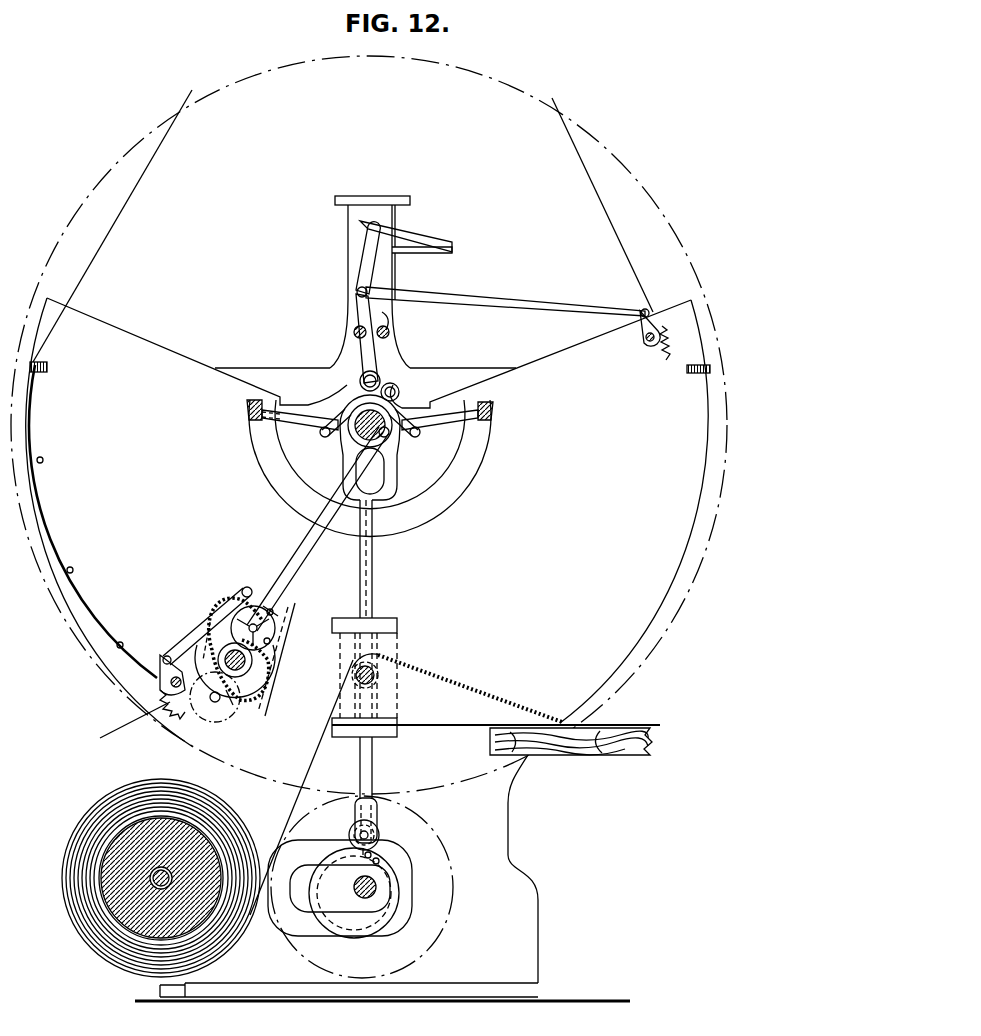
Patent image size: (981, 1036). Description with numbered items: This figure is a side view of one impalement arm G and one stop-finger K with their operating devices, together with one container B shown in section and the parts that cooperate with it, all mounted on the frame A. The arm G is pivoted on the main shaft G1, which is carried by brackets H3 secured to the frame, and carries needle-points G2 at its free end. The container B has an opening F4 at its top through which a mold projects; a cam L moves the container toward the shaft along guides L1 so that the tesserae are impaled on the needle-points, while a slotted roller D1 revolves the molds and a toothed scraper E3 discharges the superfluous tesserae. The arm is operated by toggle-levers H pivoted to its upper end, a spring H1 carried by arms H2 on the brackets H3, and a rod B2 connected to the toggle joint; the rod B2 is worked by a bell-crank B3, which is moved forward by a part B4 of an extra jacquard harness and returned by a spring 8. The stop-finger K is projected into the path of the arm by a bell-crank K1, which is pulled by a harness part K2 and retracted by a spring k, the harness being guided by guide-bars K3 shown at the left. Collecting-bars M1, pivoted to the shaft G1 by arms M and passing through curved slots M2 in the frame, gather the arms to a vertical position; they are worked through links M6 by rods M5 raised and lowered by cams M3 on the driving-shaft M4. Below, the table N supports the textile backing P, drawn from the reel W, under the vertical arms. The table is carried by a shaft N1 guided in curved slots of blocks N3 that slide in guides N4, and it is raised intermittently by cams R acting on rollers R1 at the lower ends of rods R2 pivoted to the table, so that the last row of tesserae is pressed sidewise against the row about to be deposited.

The frame A is at (367, 649).
The container B is at (275, 630).
The rod B2 is at (505, 299).
The bell-crank B3 is at (637, 332).
The part of extra harness B4 is at (602, 205).
The disc D is at (232, 683).
The roller D1 is at (269, 641).
The toothed scraper E3 is at (254, 672).
The opening F4 is at (270, 611).
The arm G is at (296, 546).
The main shaft G1 is at (386, 438).
The needle-points G2 is at (397, 633).
The toggle-levers H is at (366, 277).
The spring H1 is at (432, 228).
The arms H2 is at (428, 256).
The brackets H3 is at (348, 245).
The stop-finger K is at (212, 632).
The bell-crank K1 is at (183, 701).
The part of ordinary harness K2 is at (113, 229).
The guide-bars K3 is at (48, 368).
The spring k is at (122, 727).
The cam L is at (233, 705).
The guides L1 is at (243, 590).
The arms M is at (370, 427).
The collecting-bars M1 is at (244, 412).
The curved slots M2 is at (288, 512).
The cams M3 is at (292, 912).
The driving-shaft M4 is at (373, 897).
The rods M5 is at (385, 480).
The links M6 is at (342, 412).
The table N is at (374, 680).
The shaft N1 is at (391, 694).
The blocks N3 is at (380, 660).
The guides N4 is at (385, 618).
The textile backing P is at (626, 730).
The cams R is at (354, 893).
The rollers R1 is at (378, 830).
The rods R2 is at (362, 752).
The reel W is at (161, 878).
The spring 8 is at (672, 346).